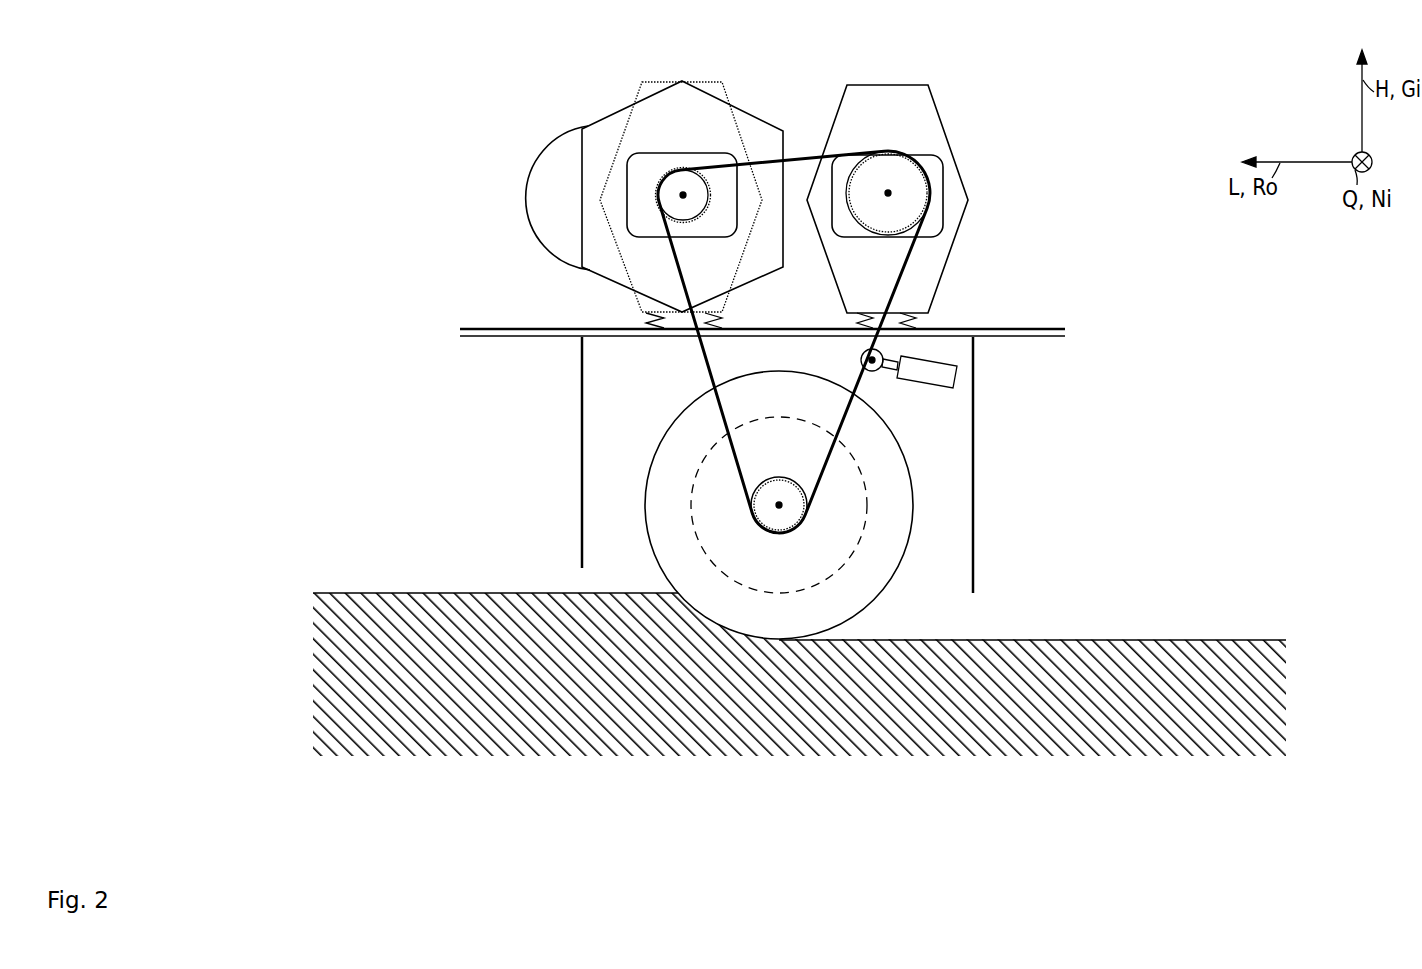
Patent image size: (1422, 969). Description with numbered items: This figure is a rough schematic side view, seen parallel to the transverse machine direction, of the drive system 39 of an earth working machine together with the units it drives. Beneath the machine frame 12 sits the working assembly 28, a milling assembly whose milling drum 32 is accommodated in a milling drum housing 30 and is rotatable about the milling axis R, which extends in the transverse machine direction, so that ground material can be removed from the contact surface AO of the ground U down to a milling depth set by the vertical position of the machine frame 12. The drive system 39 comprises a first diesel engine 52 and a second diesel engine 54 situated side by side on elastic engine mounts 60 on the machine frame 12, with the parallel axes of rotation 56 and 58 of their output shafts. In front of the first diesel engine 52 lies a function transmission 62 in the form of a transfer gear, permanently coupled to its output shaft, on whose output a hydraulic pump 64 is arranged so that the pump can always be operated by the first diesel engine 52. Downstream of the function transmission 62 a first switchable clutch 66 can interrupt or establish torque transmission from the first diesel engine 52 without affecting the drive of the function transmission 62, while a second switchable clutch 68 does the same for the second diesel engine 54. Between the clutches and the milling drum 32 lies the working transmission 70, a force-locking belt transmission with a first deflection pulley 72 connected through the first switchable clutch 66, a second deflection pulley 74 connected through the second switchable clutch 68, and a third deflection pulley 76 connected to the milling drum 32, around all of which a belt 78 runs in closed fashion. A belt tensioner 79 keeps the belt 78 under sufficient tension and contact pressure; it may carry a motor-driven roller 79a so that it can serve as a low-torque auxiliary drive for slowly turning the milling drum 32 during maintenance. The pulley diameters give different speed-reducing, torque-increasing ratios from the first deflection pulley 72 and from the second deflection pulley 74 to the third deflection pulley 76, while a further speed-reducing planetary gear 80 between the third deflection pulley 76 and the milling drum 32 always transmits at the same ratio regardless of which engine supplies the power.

The machine frame 12 is at (1027, 328).
The working assembly 28 is at (530, 400).
The milling drum housing 30 is at (975, 478).
The milling drum 32 is at (902, 566).
The drive system 39 is at (582, 66).
The first diesel engine 52 is at (650, 90).
The second diesel engine 54 is at (908, 174).
The axis of rotation 56 is at (686, 203).
The axis of rotation 58 is at (885, 200).
The elastic engine mounts 60 is at (652, 319).
The function transmission 62 is at (752, 128).
The hydraulic pump 64 is at (542, 176).
The first switchable clutch 66 is at (643, 166).
The second switchable clutch 68 is at (934, 168).
The working transmission 70 is at (928, 256).
The first deflection pulley 72 is at (690, 178).
The second deflection pulley 74 is at (892, 172).
The third deflection pulley 76 is at (777, 493).
The belt 78 is at (799, 160).
The belt tensioner 79 is at (958, 376).
The motor-driven roller 79a is at (882, 378).
The planetary gear 80 is at (870, 512).
The milling axis R is at (782, 506).
The ground U is at (368, 582).
The contact surface AO is at (492, 592).